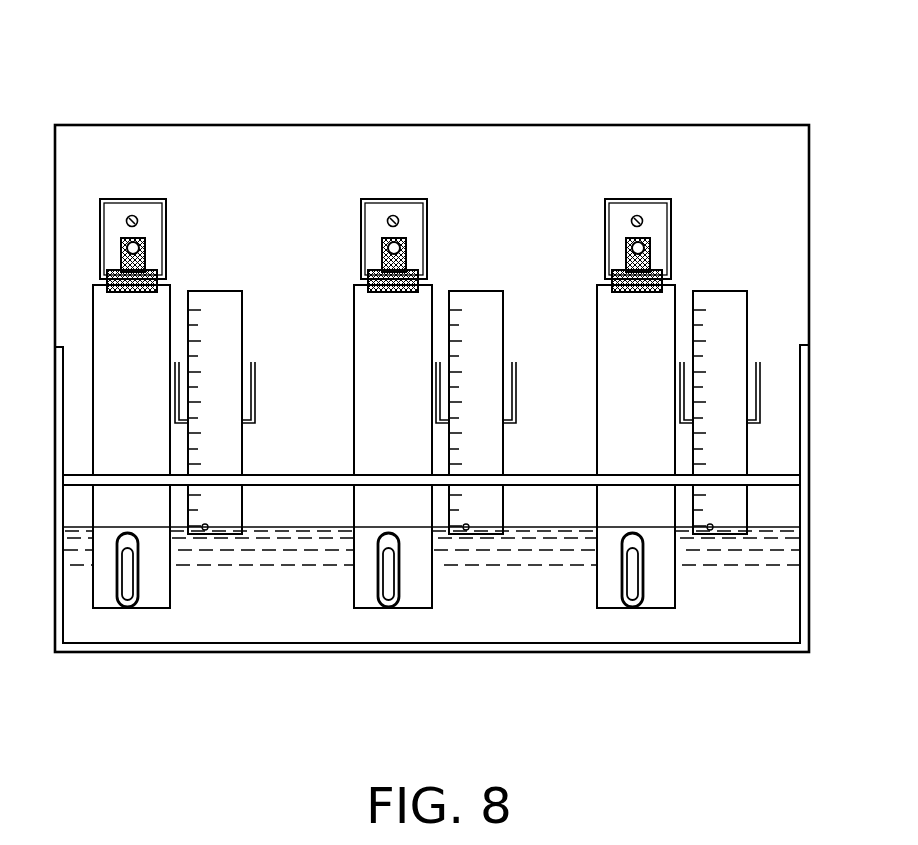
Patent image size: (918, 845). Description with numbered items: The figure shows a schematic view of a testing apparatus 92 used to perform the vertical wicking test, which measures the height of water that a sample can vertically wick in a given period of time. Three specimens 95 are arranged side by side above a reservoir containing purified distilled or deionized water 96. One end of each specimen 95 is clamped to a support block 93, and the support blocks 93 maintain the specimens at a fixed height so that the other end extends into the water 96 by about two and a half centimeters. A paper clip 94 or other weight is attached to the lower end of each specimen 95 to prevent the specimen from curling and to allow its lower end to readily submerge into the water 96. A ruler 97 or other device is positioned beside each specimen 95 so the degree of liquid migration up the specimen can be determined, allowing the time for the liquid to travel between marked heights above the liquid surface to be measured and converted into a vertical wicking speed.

The apparatus 92 is at (446, 110).
The support block 93 is at (172, 214).
The paper clip 94 is at (145, 590).
The specimen 95 is at (384, 446).
The water 96 is at (431, 575).
The ruler 97 is at (221, 287).